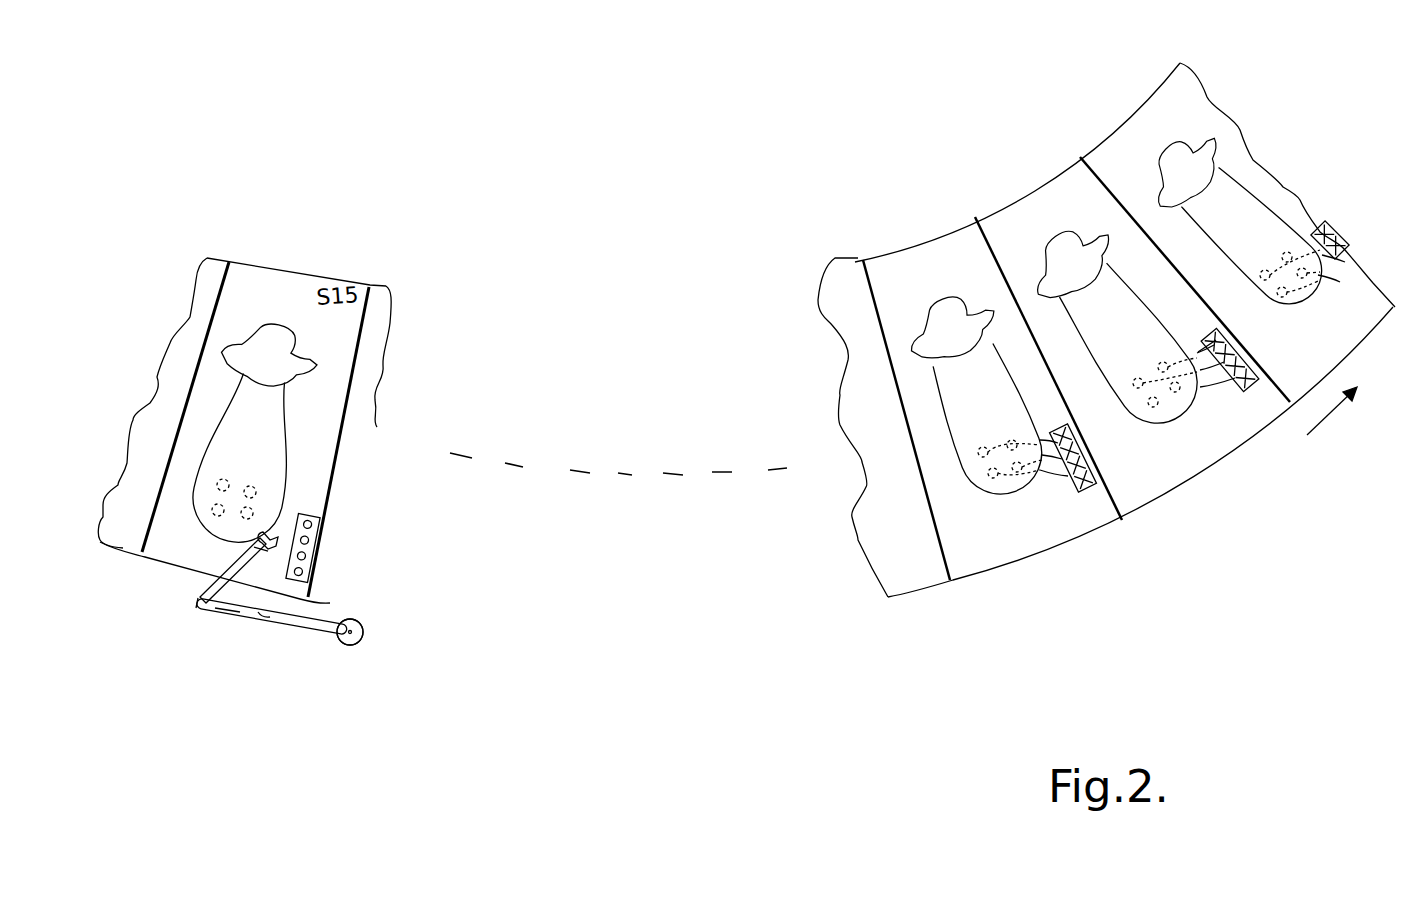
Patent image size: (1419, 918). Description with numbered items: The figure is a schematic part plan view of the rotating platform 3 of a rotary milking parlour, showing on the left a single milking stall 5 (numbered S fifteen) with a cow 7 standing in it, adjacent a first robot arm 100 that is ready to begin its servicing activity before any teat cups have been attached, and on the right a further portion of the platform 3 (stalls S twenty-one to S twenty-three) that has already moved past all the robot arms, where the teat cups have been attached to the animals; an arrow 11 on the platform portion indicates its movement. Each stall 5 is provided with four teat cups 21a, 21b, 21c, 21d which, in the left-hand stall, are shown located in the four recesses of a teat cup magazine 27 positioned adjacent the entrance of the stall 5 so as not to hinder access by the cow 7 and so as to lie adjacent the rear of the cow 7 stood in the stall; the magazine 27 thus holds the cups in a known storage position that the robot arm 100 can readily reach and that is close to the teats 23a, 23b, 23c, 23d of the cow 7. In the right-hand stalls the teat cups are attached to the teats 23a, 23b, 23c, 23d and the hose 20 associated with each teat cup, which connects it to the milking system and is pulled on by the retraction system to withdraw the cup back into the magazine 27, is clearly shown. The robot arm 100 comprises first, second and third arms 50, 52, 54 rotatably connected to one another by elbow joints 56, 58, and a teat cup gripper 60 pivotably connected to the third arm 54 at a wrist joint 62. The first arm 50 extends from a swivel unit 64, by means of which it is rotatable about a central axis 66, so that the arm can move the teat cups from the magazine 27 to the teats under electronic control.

The platform 3 is at (885, 180).
The milking stall 5 is at (255, 272).
The cow 7 is at (272, 333).
The direction of movement 11 is at (1332, 411).
The hose 20 is at (1230, 380).
The teat cup 21a is at (301, 573).
The teat cup 21b is at (305, 556).
The teat cup 21c is at (309, 539).
The teat cup 21d is at (318, 524).
The teat 23a is at (1285, 300).
The teat 23b is at (1003, 490).
The teat 23c is at (1263, 273).
The teat 23d is at (1007, 440).
The teat cup magazine 27 is at (1203, 333).
The first arm 50 is at (307, 624).
The second arm 52 is at (226, 617).
The third arm 54 is at (247, 556).
The elbow joint 56 is at (263, 622).
The elbow joint 58 is at (196, 609).
The teat cup gripper 60 is at (272, 540).
The wrist joint 62 is at (257, 551).
The swivel unit 64 is at (352, 646).
The central axis 66 is at (357, 640).
The first robot arm 100 is at (253, 605).